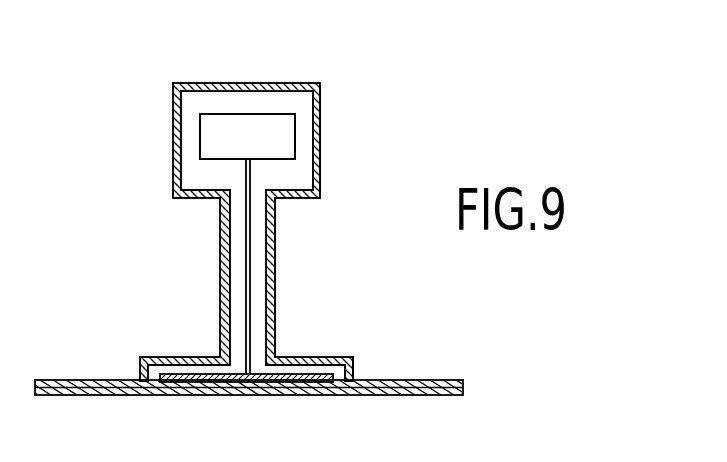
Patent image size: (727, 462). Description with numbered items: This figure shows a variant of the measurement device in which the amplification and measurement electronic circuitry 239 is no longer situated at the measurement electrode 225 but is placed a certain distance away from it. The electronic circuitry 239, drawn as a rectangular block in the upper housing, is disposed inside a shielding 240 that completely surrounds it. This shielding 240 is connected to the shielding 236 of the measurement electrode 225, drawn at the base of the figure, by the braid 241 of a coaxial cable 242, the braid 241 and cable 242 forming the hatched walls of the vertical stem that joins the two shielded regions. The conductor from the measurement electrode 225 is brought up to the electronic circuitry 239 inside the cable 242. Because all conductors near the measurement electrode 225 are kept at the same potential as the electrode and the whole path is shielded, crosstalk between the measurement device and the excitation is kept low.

The measurement electrode 225 is at (319, 373).
The shielding 236 is at (176, 356).
The electronic circuitry 239 is at (243, 128).
The shielding 240 is at (322, 143).
The braid 241 is at (276, 269).
The coaxial cable 242 is at (219, 264).